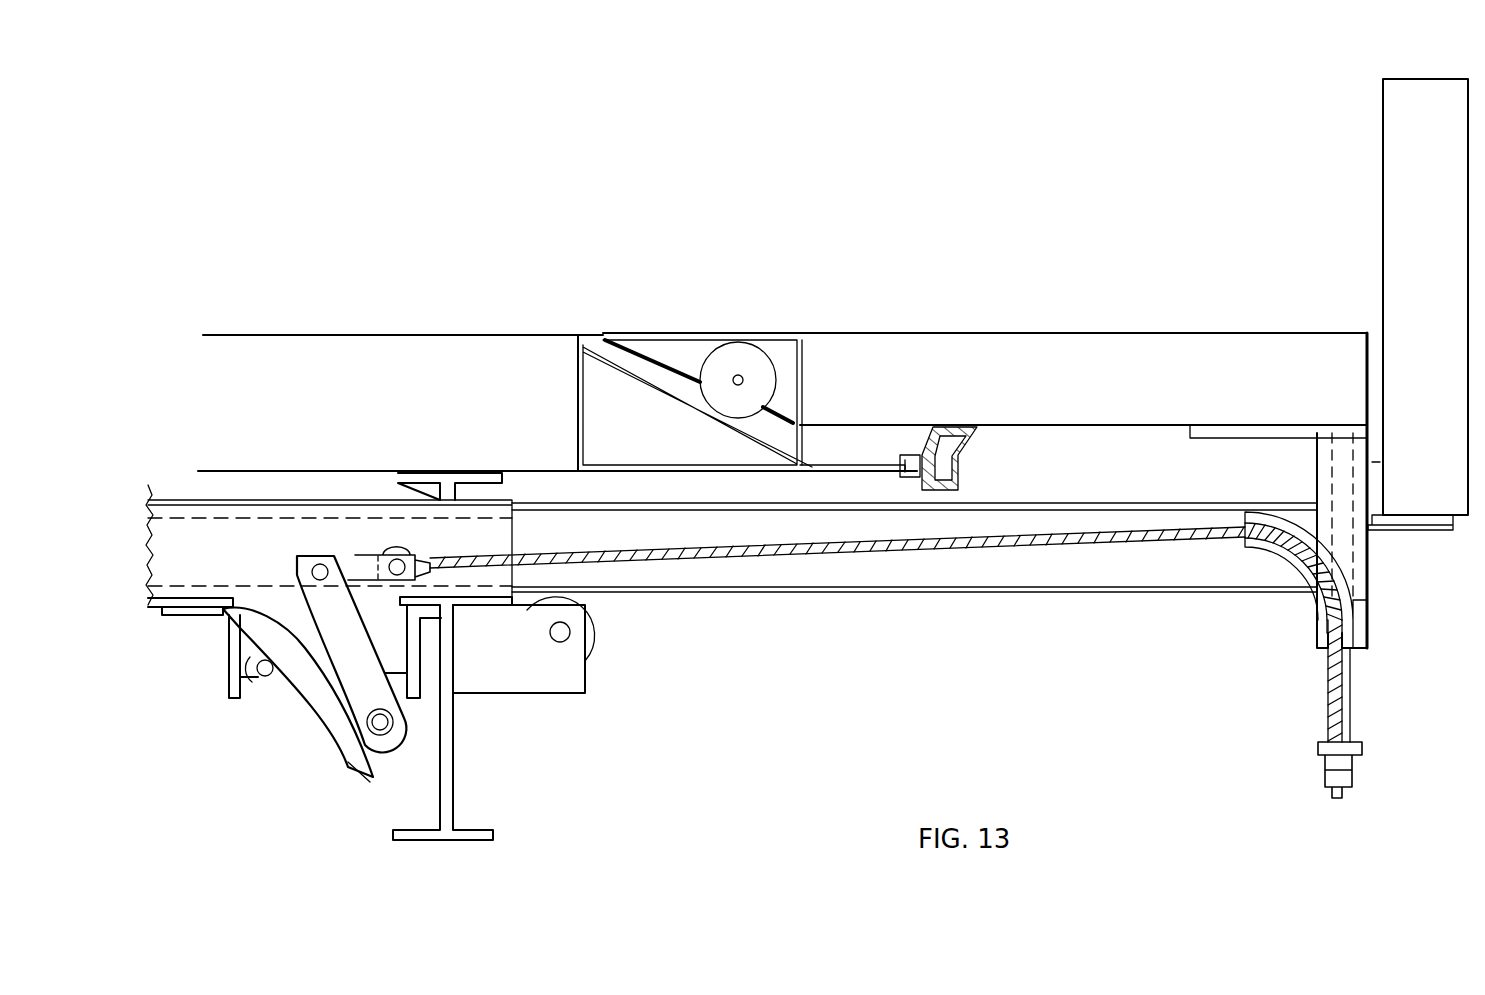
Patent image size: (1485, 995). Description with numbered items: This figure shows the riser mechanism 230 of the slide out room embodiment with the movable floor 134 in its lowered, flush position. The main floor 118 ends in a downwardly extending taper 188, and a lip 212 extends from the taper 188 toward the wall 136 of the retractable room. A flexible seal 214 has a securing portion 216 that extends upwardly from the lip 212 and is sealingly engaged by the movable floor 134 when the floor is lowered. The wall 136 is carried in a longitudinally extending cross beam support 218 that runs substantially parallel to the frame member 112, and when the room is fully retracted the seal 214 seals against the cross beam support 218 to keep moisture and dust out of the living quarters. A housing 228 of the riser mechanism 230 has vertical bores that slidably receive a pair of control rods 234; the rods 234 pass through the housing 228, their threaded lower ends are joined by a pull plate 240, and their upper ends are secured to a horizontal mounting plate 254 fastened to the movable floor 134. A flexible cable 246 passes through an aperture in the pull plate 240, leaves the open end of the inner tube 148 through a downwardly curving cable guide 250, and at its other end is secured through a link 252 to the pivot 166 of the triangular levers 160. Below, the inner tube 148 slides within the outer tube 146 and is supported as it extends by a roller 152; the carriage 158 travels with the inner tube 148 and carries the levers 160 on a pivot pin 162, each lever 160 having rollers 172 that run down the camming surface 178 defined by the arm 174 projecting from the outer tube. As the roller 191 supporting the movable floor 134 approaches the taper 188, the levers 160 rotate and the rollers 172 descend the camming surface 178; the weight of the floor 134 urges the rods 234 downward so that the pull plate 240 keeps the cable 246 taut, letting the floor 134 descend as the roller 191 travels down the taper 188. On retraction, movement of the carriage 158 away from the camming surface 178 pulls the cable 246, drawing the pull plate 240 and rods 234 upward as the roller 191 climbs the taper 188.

The frame member 112 is at (455, 800).
The main floor 118 is at (437, 348).
The movable floor 134 is at (1117, 343).
The wall 136 is at (1397, 200).
The outer tube 146 is at (195, 612).
The inner tube 148 is at (1020, 592).
The roller 152 is at (595, 633).
The carriage 158 is at (220, 694).
The triangle lever 160 is at (318, 610).
The pivot pin 162 is at (266, 676).
The pivot 166 is at (317, 563).
The roller 172 is at (400, 718).
The arm 174 is at (339, 733).
The camming surface 178 is at (390, 752).
The taper 188 is at (665, 380).
The roller 191 is at (752, 362).
The lip 212 is at (867, 474).
The flexible seal 214 is at (960, 459).
The securing portion 216 is at (905, 456).
The cross beam support 218 is at (1416, 532).
The housing 228 is at (1368, 628).
The riser mechanism 230 is at (1362, 720).
The control rod 234 is at (1350, 700).
The pull plate 240 is at (1318, 746).
The flexible cable 246 is at (1142, 544).
The cable guide 250 is at (1368, 600).
The link 252 is at (363, 567).
The mounting plate 254 is at (1228, 438).